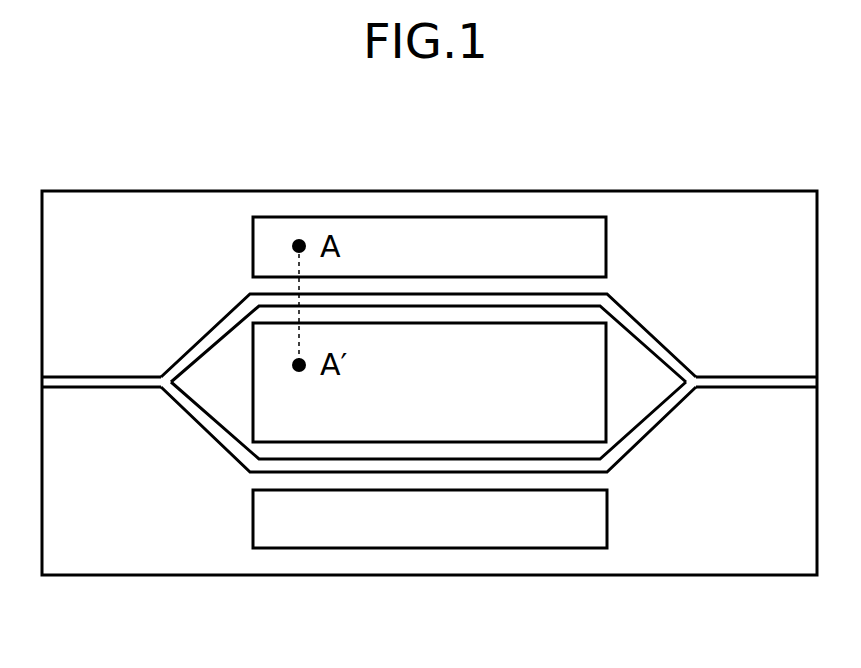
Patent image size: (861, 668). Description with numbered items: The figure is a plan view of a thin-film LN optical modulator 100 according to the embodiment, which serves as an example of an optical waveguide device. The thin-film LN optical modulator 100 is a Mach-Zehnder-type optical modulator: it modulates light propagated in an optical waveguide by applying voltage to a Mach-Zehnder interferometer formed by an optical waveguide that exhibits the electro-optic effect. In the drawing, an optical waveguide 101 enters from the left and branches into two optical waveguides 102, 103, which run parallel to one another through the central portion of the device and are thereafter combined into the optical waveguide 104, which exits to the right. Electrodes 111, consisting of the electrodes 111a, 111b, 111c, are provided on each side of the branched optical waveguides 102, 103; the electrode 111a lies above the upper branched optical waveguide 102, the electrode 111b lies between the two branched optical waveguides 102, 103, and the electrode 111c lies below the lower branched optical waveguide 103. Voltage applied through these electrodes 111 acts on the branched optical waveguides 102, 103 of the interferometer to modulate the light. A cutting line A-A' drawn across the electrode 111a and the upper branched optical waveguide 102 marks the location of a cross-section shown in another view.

The thin-film LN optical modulator 100 is at (653, 162).
The optical waveguide 101 is at (92, 377).
The optical waveguide 102 is at (373, 293).
The optical waveguide 103 is at (347, 472).
The optical waveguide 104 is at (737, 377).
The electrodes 111 is at (487, 368).
The electrode 111a is at (510, 238).
The electrode 111b is at (578, 370).
The electrode 111c is at (530, 527).